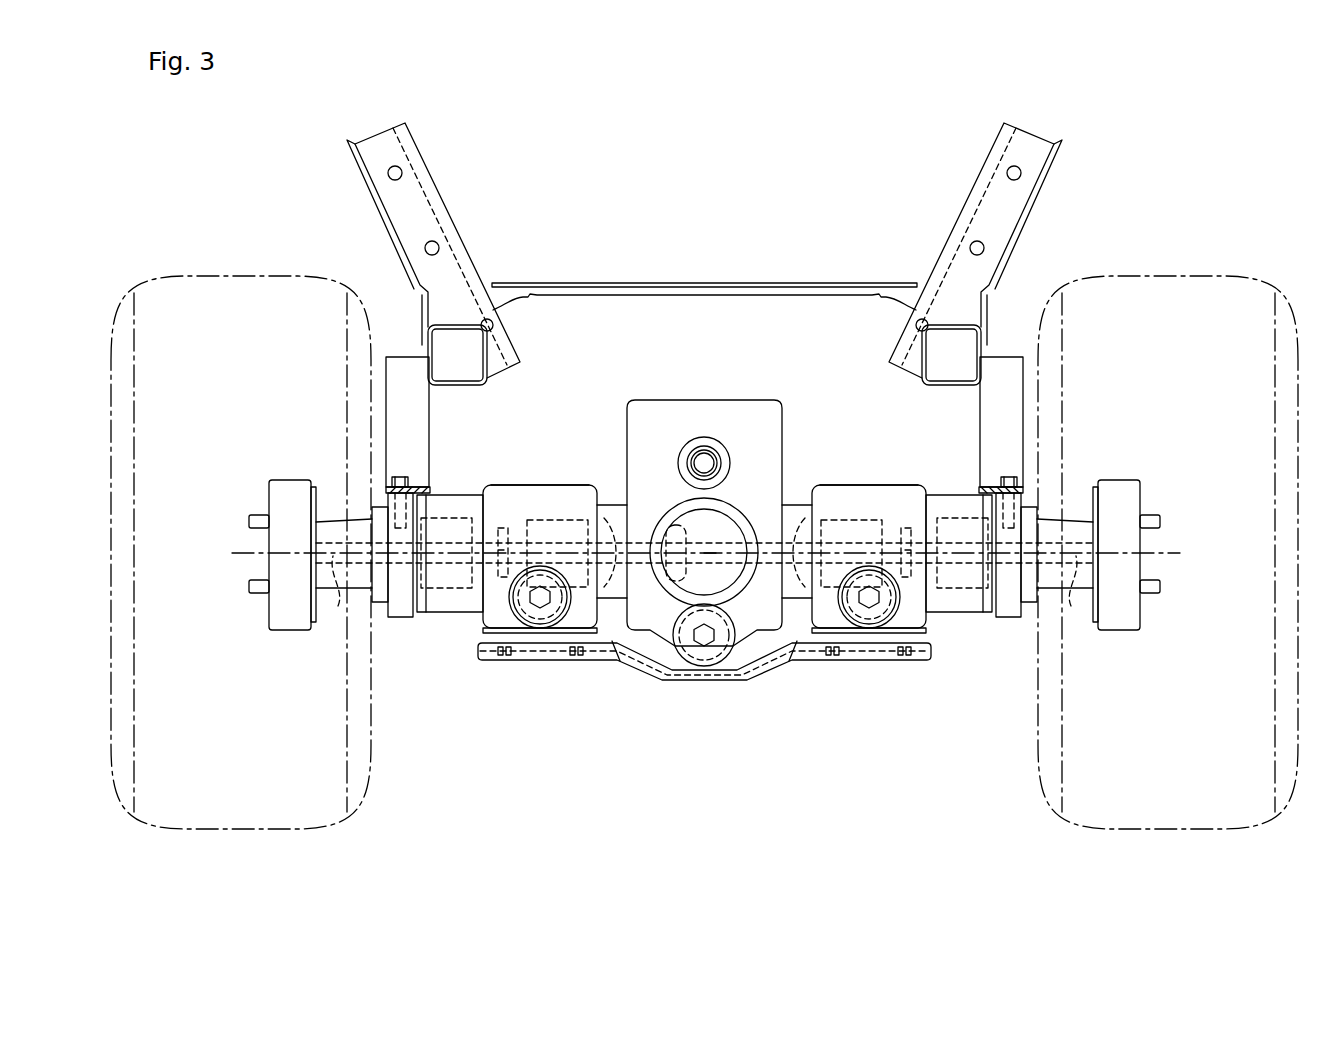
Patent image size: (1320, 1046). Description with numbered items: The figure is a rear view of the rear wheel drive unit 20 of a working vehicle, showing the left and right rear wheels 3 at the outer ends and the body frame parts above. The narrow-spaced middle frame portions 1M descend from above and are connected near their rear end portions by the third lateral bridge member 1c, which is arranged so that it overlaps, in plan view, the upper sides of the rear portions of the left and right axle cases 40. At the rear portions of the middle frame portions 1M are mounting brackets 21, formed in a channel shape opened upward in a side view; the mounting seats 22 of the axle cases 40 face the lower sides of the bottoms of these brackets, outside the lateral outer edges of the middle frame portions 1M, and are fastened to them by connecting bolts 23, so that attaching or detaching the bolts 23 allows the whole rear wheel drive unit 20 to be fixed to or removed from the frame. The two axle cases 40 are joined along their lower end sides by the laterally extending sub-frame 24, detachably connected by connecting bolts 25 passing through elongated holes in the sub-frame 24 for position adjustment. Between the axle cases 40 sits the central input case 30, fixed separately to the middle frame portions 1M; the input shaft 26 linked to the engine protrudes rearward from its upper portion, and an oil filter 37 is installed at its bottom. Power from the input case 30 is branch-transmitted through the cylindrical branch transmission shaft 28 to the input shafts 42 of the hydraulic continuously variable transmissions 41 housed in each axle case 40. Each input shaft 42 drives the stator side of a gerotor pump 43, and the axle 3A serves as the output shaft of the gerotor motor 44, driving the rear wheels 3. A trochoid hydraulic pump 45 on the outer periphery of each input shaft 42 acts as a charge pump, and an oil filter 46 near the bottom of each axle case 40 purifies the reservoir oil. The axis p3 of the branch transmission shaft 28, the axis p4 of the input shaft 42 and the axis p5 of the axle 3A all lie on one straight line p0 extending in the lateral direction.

The rear wheel 3 is at (238, 276).
The axle 3A is at (398, 600).
The third lateral bridge member 1c is at (693, 283).
The middle frame portion 1M is at (514, 346).
The rear wheel drive unit 20 is at (704, 565).
The mounting bracket 21 is at (386, 462).
The mounting seat 22 is at (387, 496).
The connecting bolt 23 is at (401, 476).
The sub-frame 24 is at (704, 689).
The connecting bolt 25 is at (508, 661).
The input shaft 26 is at (706, 462).
The branch transmission shaft 28 is at (690, 535).
The input case 30 is at (704, 504).
The oil filter 37 is at (737, 615).
The axle case 40 is at (495, 486).
The hydraulic continuously variable transmission 41 is at (530, 486).
The input shaft 42 is at (612, 545).
The pump 43 is at (528, 500).
The motor 44 is at (451, 520).
The hydraulic pump 45 is at (505, 570).
The oil filter 46 is at (617, 655).
The straight line p0 is at (704, 553).
The axis of branch transmission shaft p3 is at (716, 553).
The axis of input shaft p4 is at (563, 555).
The axis of axle p5 is at (707, 590).